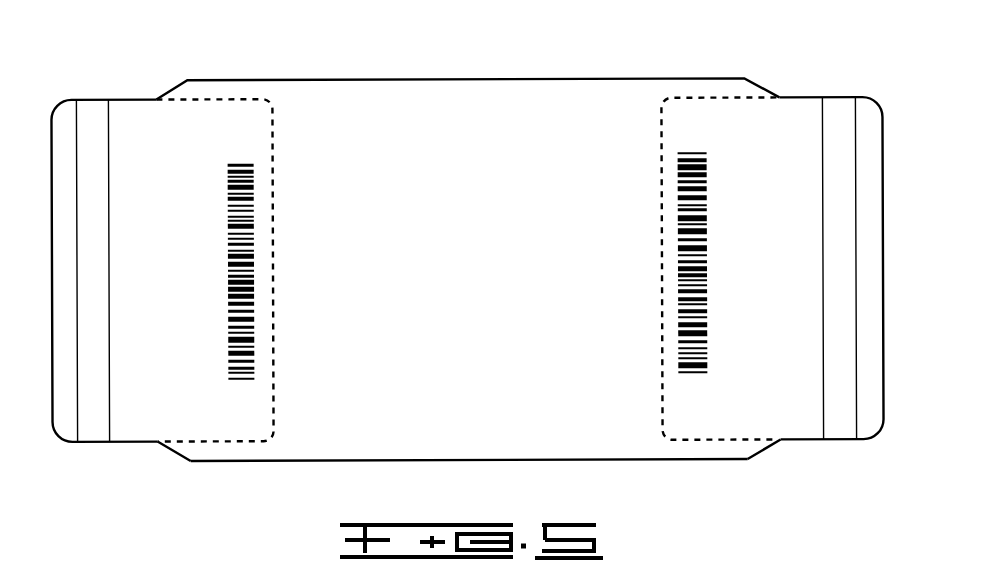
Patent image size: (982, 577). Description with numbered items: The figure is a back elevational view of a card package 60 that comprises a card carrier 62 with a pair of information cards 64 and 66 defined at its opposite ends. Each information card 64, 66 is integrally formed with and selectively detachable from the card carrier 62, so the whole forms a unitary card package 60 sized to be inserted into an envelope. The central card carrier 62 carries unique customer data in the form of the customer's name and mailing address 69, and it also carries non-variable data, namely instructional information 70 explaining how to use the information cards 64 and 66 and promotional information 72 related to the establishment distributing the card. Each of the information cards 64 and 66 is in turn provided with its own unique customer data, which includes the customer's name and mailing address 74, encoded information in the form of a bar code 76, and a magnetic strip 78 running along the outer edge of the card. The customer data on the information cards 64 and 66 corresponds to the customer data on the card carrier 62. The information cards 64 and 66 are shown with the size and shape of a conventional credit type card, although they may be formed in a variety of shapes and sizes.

The card package 60 is at (519, 79).
The card carrier 62 is at (631, 79).
The information card 64 is at (140, 115).
The information card 66 is at (792, 111).
The customer's name and mailing address 69 is at (563, 408).
The instructional information 70 is at (412, 253).
The promotional information 72 is at (343, 132).
The customer's name and mailing address 74 is at (167, 405).
The bar code 76 is at (238, 382).
The magnetic strip 78 is at (95, 412).